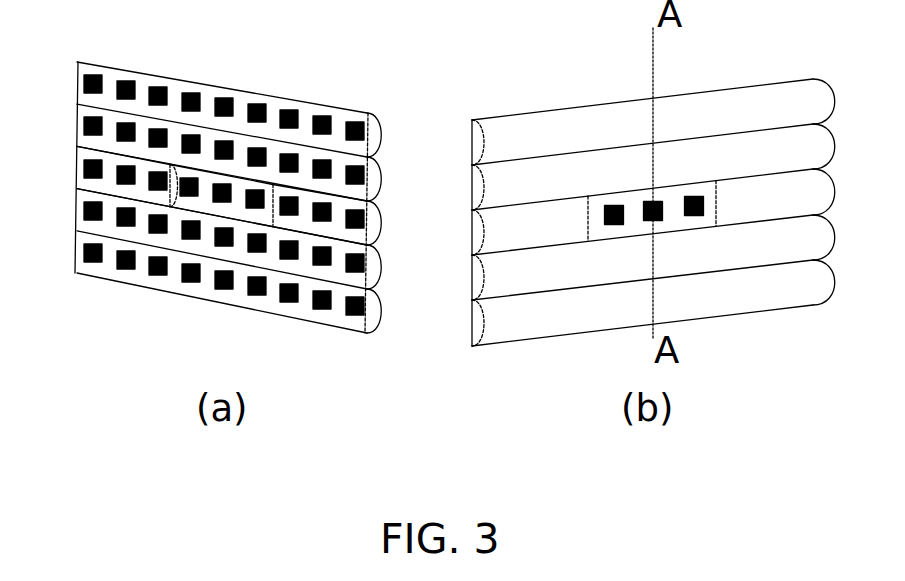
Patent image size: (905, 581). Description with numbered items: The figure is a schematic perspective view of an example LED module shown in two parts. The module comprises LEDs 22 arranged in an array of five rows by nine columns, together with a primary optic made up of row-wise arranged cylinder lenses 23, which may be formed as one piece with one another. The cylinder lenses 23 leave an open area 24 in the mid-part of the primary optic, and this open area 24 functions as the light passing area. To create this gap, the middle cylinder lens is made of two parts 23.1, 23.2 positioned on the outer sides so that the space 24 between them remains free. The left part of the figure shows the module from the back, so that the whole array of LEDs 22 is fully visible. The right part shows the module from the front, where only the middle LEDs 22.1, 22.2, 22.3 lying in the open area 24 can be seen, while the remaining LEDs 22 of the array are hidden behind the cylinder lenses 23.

The LEDs 22 is at (123, 77).
The middle LED 22.1 is at (188, 174).
The middle LED 22.2 is at (226, 190).
The middle LED 22.3 is at (257, 187).
The cylinder lenses 23 is at (378, 183).
The first part of middle cylinder lens 23.1 is at (140, 200).
The second part of middle cylinder lens 23.2 is at (378, 225).
The open area 24 is at (241, 205).